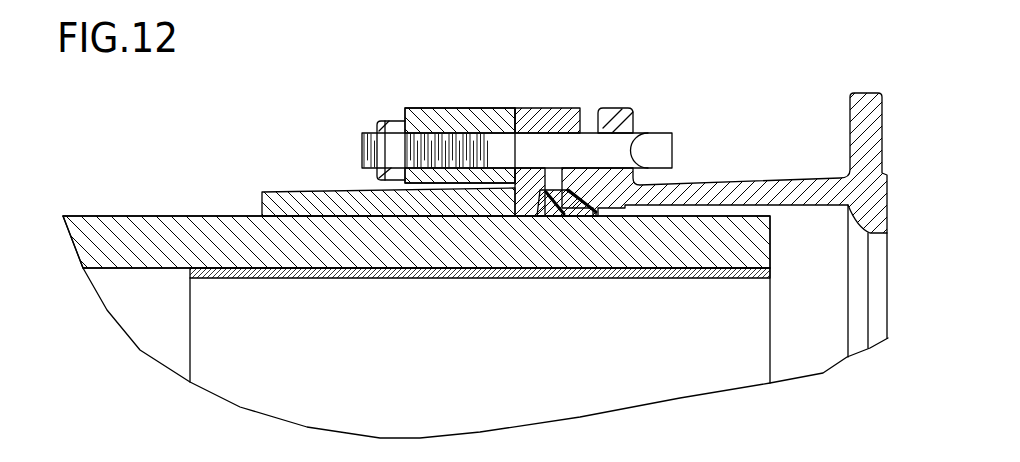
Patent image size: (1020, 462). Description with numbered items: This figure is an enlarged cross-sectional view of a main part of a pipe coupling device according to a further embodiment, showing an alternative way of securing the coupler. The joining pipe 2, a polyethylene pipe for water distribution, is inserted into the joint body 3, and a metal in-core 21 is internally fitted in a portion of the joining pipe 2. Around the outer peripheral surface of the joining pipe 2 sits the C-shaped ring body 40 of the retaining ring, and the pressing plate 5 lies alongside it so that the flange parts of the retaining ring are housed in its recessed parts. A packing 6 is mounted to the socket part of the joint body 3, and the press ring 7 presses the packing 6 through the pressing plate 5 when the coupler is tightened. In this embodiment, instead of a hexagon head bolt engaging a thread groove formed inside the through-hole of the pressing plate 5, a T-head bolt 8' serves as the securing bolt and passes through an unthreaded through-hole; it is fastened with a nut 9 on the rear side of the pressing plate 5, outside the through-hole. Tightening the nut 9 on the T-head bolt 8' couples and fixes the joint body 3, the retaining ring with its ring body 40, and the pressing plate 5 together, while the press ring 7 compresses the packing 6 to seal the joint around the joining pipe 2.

The joining pipe 2 is at (143, 224).
The in-core 21 is at (288, 278).
The ring body 40 is at (287, 192).
The nut 9 is at (380, 128).
The pressing plate 5 is at (447, 108).
The press ring 7 is at (552, 108).
The T-head bolt 8' is at (539, 132).
The joint body 3 is at (768, 187).
The packing 6 is at (560, 208).